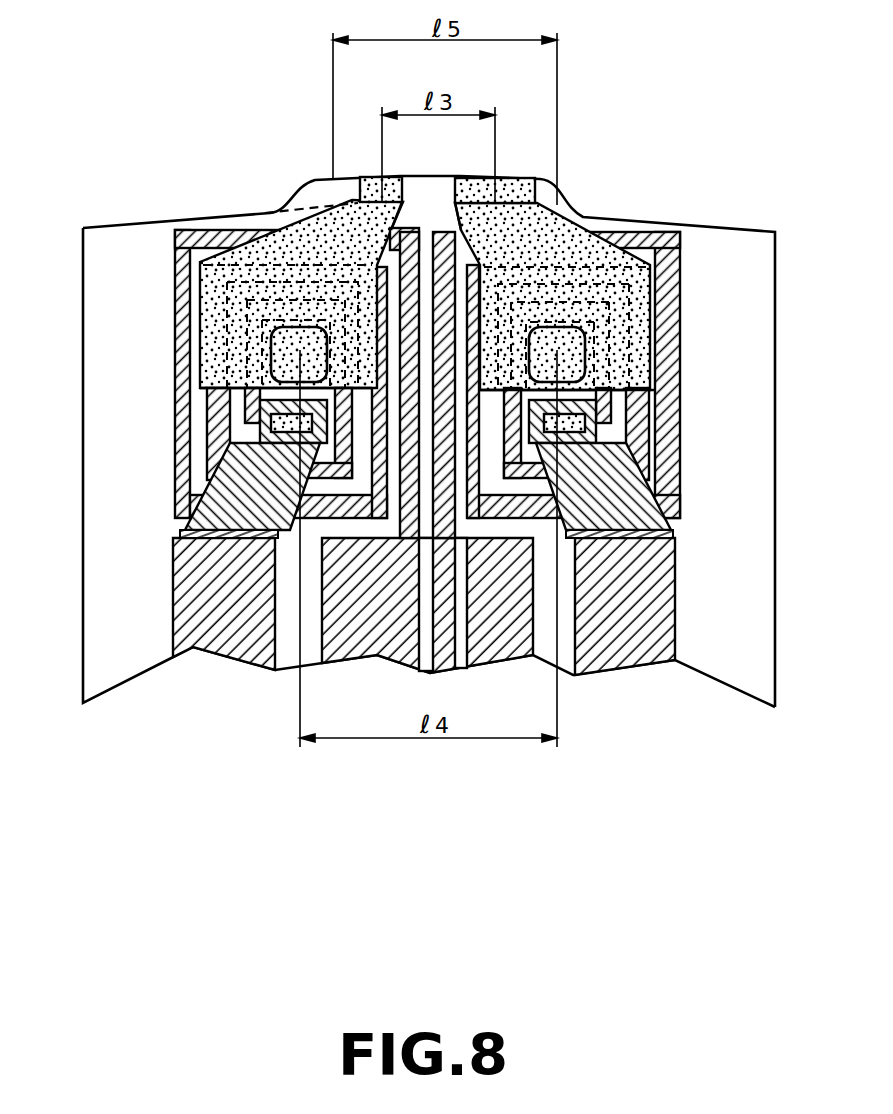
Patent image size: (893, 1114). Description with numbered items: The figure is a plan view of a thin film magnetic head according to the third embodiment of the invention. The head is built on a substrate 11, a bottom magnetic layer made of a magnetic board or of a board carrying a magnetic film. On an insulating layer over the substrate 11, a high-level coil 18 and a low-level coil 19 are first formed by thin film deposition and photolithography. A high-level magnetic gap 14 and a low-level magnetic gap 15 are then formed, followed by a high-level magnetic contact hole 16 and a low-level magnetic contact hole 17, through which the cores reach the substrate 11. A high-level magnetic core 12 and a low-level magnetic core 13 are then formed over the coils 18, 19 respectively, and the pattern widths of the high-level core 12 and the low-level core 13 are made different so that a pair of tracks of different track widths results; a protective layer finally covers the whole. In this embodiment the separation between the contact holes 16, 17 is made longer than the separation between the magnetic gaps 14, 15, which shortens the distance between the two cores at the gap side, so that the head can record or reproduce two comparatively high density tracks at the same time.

The substrate 11 is at (720, 655).
The high-level magnetic core 12 is at (333, 227).
The low-level magnetic core 13 is at (573, 237).
The high-level magnetic gap 14 is at (370, 176).
The low-level magnetic gap 15 is at (520, 177).
The high-level magnetic contact hole 16 is at (292, 362).
The low-level magnetic contact hole 17 is at (570, 352).
The high-level coil 18 is at (175, 483).
The low-level coil 19 is at (680, 457).